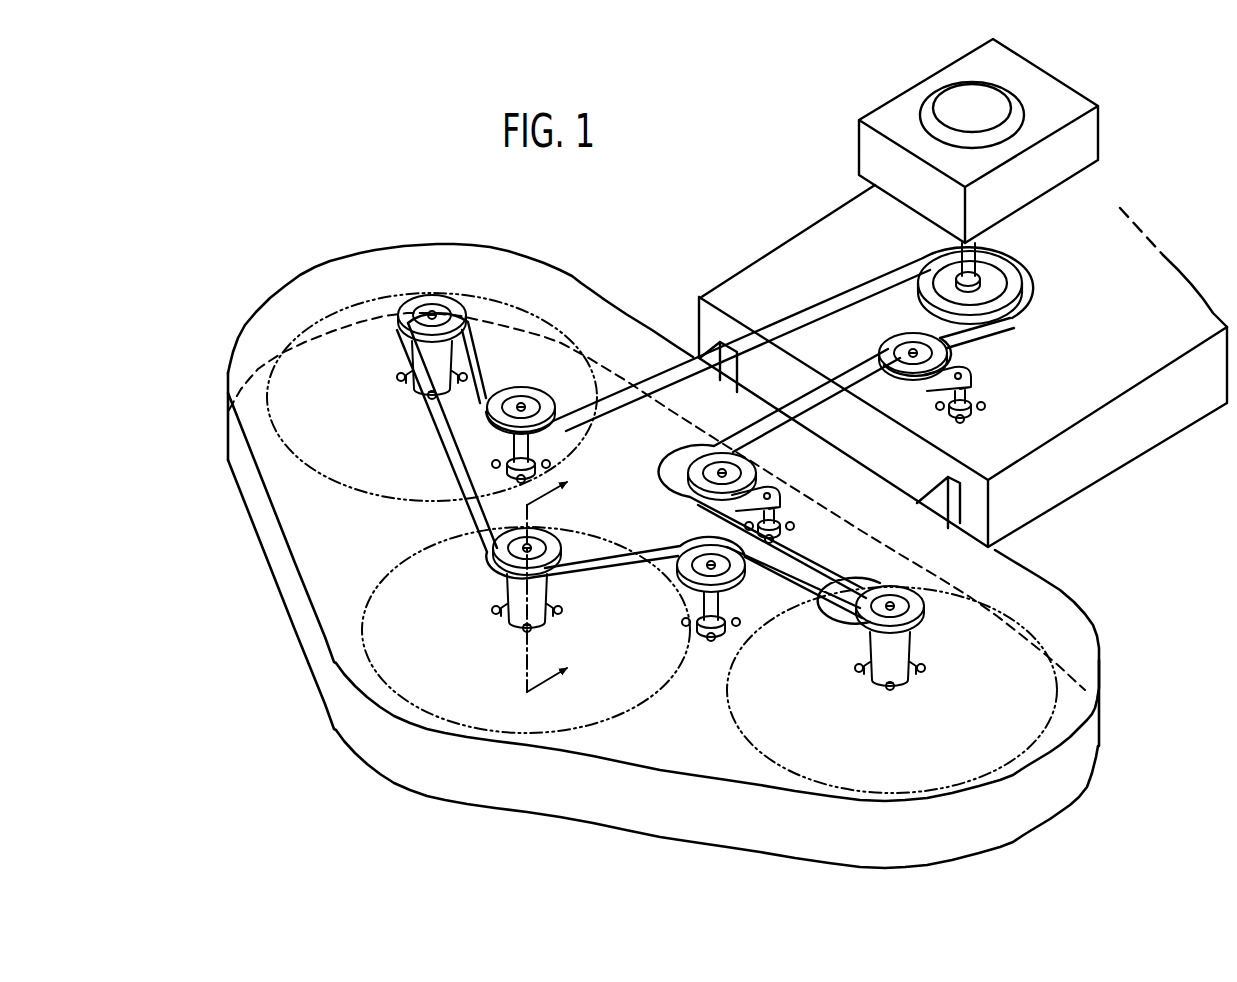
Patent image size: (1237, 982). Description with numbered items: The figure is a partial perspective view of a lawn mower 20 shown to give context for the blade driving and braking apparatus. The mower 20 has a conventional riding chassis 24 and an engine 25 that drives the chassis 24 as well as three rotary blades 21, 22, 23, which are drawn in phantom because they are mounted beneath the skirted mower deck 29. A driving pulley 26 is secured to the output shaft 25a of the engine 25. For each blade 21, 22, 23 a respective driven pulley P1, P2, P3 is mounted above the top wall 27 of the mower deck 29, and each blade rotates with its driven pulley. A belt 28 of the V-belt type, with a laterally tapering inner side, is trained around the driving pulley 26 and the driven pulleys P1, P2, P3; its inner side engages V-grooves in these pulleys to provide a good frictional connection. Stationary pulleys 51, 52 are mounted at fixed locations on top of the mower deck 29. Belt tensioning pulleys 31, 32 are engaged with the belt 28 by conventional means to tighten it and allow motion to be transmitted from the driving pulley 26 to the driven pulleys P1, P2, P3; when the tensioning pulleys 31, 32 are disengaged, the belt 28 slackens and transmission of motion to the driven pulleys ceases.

The lawn mower 20 is at (1172, 573).
The rotary blade 21 is at (318, 477).
The rotary blade 22 is at (623, 720).
The rotary blade 23 is at (740, 737).
The riding chassis 24 is at (1100, 457).
The engine 25 is at (900, 107).
The output shaft 25a is at (975, 247).
The driving pulley 26 is at (1020, 280).
The top wall 27 is at (364, 552).
The belt 28 is at (618, 400).
The skirted mower deck 29 is at (1010, 817).
The belt tensioning pulley 31 is at (945, 348).
The belt tensioning pulley 32 is at (687, 460).
The stationary pulley 51 is at (517, 388).
The stationary pulley 52 is at (735, 583).
The driven pulley P1 is at (455, 296).
The driven pulley P2 is at (550, 528).
The driven pulley P3 is at (918, 612).